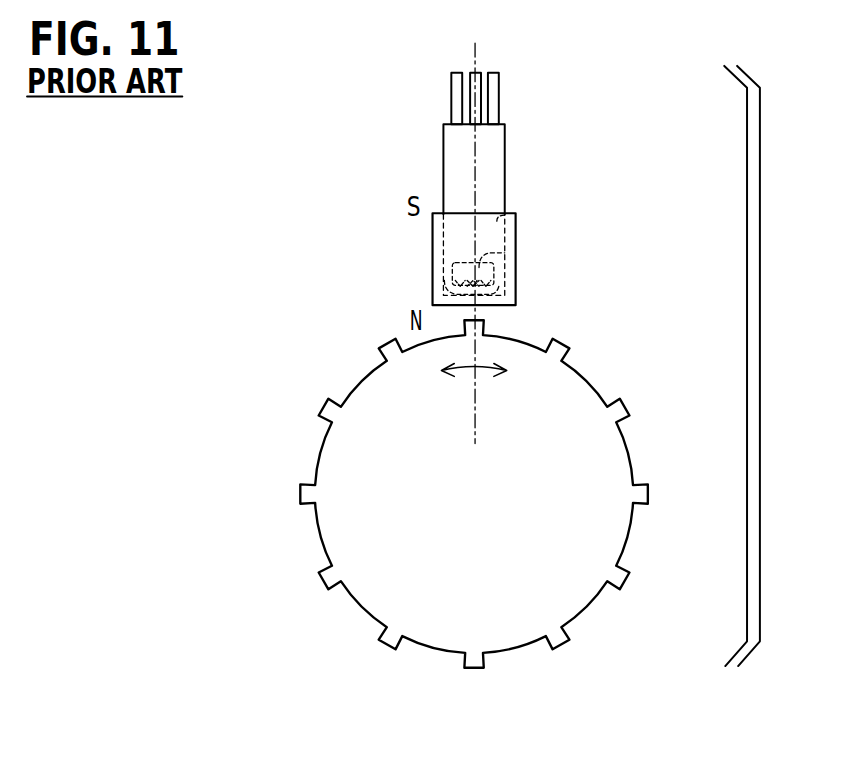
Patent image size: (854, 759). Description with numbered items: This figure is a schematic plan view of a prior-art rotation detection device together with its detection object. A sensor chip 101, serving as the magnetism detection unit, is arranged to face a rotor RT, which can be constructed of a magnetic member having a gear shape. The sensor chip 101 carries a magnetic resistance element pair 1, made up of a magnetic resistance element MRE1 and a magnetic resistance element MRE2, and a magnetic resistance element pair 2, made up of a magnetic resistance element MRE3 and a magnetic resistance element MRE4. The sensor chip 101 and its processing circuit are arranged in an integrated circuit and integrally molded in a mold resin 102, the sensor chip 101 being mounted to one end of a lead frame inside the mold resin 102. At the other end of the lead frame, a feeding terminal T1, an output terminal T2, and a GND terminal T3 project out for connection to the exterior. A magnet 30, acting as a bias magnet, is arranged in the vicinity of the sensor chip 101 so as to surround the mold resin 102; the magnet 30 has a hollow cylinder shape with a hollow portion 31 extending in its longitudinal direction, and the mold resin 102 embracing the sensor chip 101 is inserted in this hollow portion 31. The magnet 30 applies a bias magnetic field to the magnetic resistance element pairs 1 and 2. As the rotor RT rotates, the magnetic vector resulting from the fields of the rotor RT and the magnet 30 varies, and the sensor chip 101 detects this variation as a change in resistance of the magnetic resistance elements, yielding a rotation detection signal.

The feeding terminal T1 is at (456, 66).
The output terminal T2 is at (473, 67).
The GND terminal T3 is at (497, 62).
The mold resin 102 is at (506, 133).
The magnet 30 is at (517, 232).
The hollow portion 31 is at (498, 218).
The sensor chip 101 is at (507, 257).
The magnetic resistance element pair 1 is at (352, 252).
The magnetic resistance element pair 2 is at (603, 275).
The magnetic resistance element MRE1 is at (445, 282).
The magnetic resistance element MRE2 is at (447, 291).
The magnetic resistance element MRE3 is at (514, 297).
The magnetic resistance element MRE4 is at (503, 285).
The rotor RT is at (587, 377).